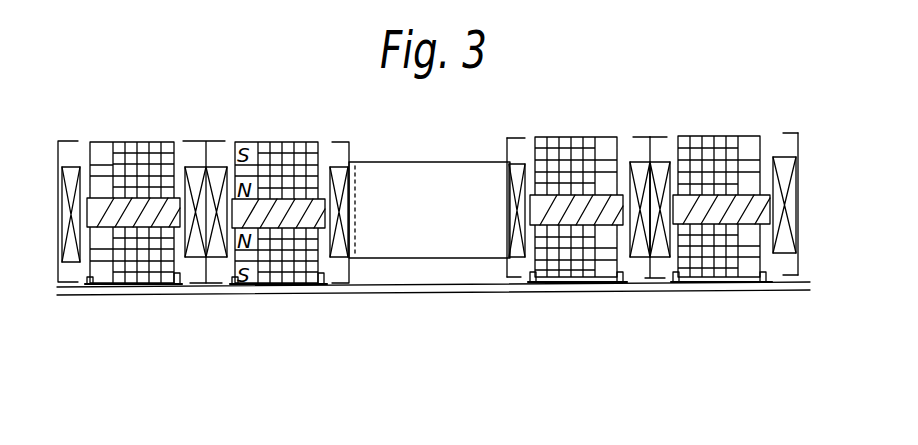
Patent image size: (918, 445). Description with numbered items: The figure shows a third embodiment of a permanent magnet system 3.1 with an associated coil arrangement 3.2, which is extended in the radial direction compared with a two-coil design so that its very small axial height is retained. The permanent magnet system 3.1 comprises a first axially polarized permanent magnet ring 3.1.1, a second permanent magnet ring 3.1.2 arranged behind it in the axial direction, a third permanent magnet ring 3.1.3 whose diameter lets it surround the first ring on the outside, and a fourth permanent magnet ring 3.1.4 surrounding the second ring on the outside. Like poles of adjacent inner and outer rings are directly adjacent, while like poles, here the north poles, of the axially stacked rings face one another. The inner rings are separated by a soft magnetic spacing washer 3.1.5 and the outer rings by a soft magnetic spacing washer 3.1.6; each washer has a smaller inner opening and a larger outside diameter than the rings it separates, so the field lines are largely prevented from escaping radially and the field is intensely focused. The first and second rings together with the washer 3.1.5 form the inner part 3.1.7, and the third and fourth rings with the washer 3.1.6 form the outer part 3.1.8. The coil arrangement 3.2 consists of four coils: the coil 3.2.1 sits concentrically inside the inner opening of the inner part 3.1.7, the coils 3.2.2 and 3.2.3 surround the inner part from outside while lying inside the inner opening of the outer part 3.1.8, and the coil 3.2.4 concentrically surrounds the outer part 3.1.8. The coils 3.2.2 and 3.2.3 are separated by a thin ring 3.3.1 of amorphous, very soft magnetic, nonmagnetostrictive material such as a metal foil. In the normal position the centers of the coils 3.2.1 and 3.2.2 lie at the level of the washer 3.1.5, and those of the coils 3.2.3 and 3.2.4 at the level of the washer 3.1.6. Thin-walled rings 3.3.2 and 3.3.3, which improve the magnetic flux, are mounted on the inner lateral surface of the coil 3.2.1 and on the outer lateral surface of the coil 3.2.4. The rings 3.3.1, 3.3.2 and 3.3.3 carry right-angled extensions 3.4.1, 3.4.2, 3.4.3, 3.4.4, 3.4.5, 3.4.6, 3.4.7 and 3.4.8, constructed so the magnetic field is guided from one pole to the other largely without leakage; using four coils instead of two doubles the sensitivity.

The permanent magnet system 3.1 is at (287, 288).
The first axially polarized permanent magnet ring 3.1.1 is at (582, 136).
The second permanent magnet ring 3.1.2 is at (556, 268).
The third permanent magnet ring 3.1.3 is at (723, 136).
The fourth permanent magnet ring 3.1.4 is at (704, 280).
The soft magnetic spacing washer 3.1.5 is at (522, 281).
The soft magnetic spacing washer 3.1.6 is at (736, 270).
The inner part 3.1.7 is at (579, 282).
The outer part 3.1.8 is at (694, 280).
The coil arrangement 3.2 is at (517, 152).
The coil 3.2.1 is at (505, 158).
The coil 3.2.2 is at (647, 279).
The coil 3.2.3 is at (666, 278).
The coil 3.2.4 is at (800, 155).
The thin ring 3.3.1 is at (205, 152).
The thin-walled ring 3.3.2 is at (507, 262).
The thin-walled ring 3.3.3 is at (798, 232).
The right-angled extension 3.4.1 is at (515, 137).
The right-angled extension 3.4.2 is at (515, 277).
The right-angled extension 3.4.3 is at (636, 137).
The right-angled extension 3.4.4 is at (640, 282).
The right-angled extension 3.4.5 is at (657, 137).
The right-angled extension 3.4.6 is at (193, 282).
The right-angled extension 3.4.7 is at (782, 134).
The right-angled extension 3.4.8 is at (783, 277).